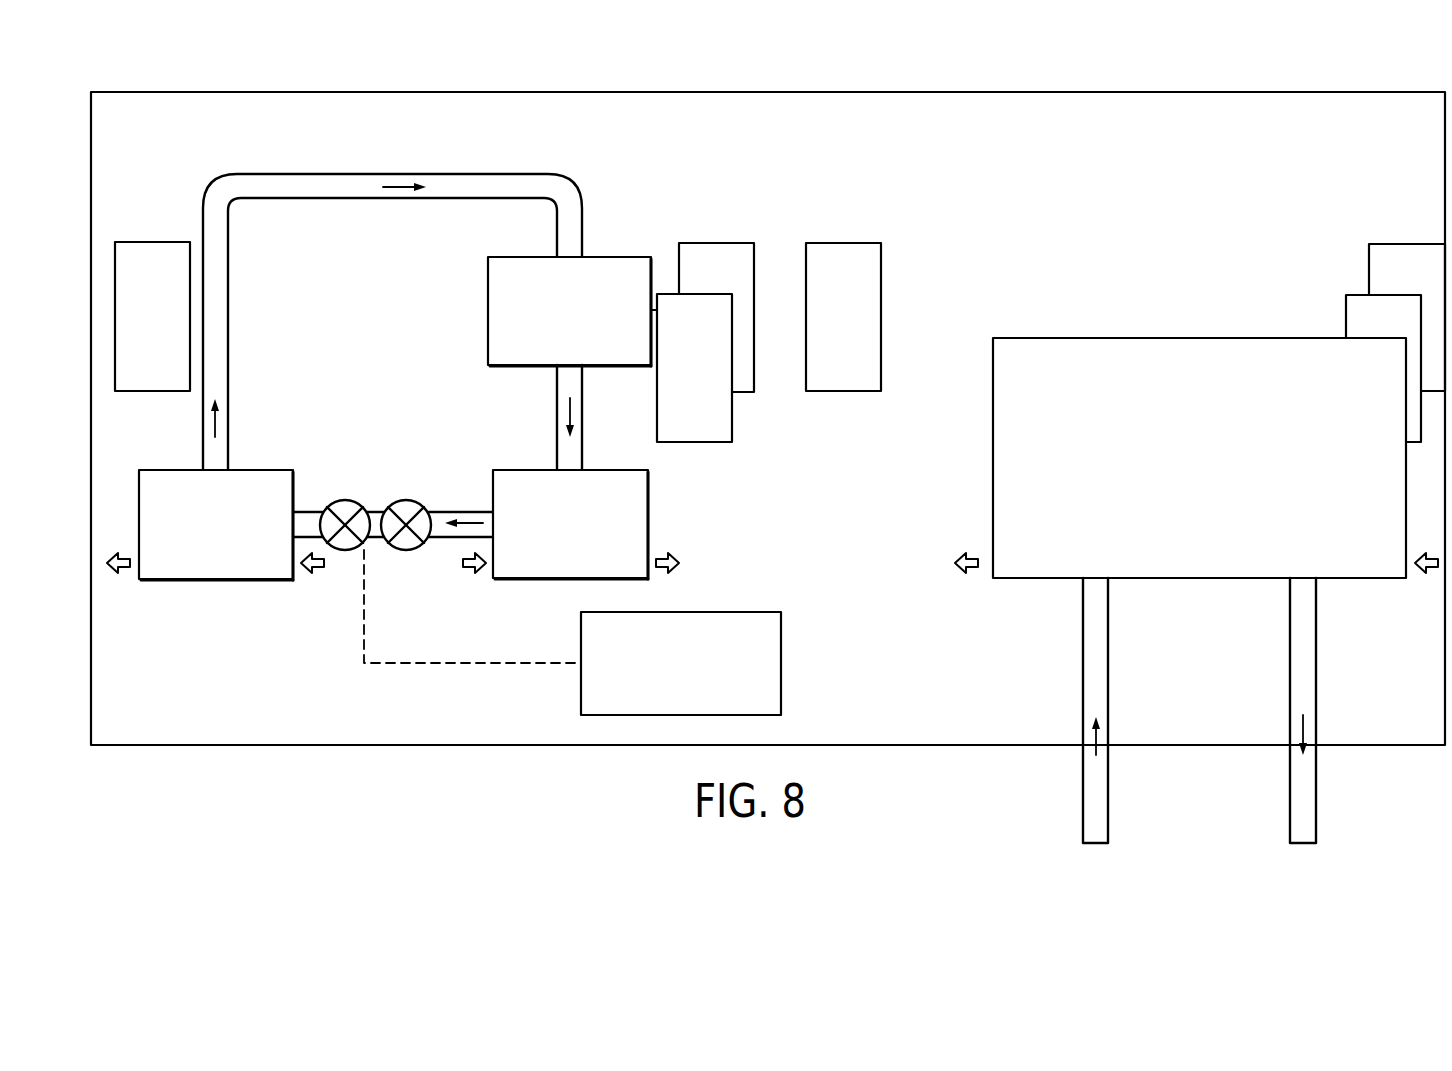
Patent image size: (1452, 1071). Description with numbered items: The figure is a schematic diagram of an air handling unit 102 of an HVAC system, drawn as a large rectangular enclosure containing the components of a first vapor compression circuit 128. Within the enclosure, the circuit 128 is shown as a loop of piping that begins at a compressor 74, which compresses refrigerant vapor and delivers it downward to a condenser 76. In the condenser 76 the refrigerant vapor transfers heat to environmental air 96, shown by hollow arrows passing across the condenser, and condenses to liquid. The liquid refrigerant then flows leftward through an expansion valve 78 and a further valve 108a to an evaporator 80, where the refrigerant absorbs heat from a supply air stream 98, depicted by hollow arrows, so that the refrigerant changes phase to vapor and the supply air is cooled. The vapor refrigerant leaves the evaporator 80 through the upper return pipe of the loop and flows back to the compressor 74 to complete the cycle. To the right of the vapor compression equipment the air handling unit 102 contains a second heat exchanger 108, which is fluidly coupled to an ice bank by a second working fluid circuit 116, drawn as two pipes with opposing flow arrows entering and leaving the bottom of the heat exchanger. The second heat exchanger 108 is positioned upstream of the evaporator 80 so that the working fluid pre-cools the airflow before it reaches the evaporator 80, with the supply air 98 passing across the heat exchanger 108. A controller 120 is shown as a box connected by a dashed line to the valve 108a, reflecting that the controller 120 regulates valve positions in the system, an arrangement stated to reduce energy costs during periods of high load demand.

The air handling unit 102 is at (258, 92).
The first vapor compression circuit 128 is at (400, 145).
The compressor 74 is at (521, 257).
The condenser 76 is at (524, 470).
The expansion valve 78 is at (406, 500).
The valve 108a is at (345, 500).
The evaporator 80 is at (215, 580).
The environmental air 96 is at (468, 573).
The supply air stream 98 is at (124, 573).
The second heat exchanger 108 is at (1097, 338).
The second working fluid circuit 116 is at (1083, 775).
The controller 120 is at (781, 635).